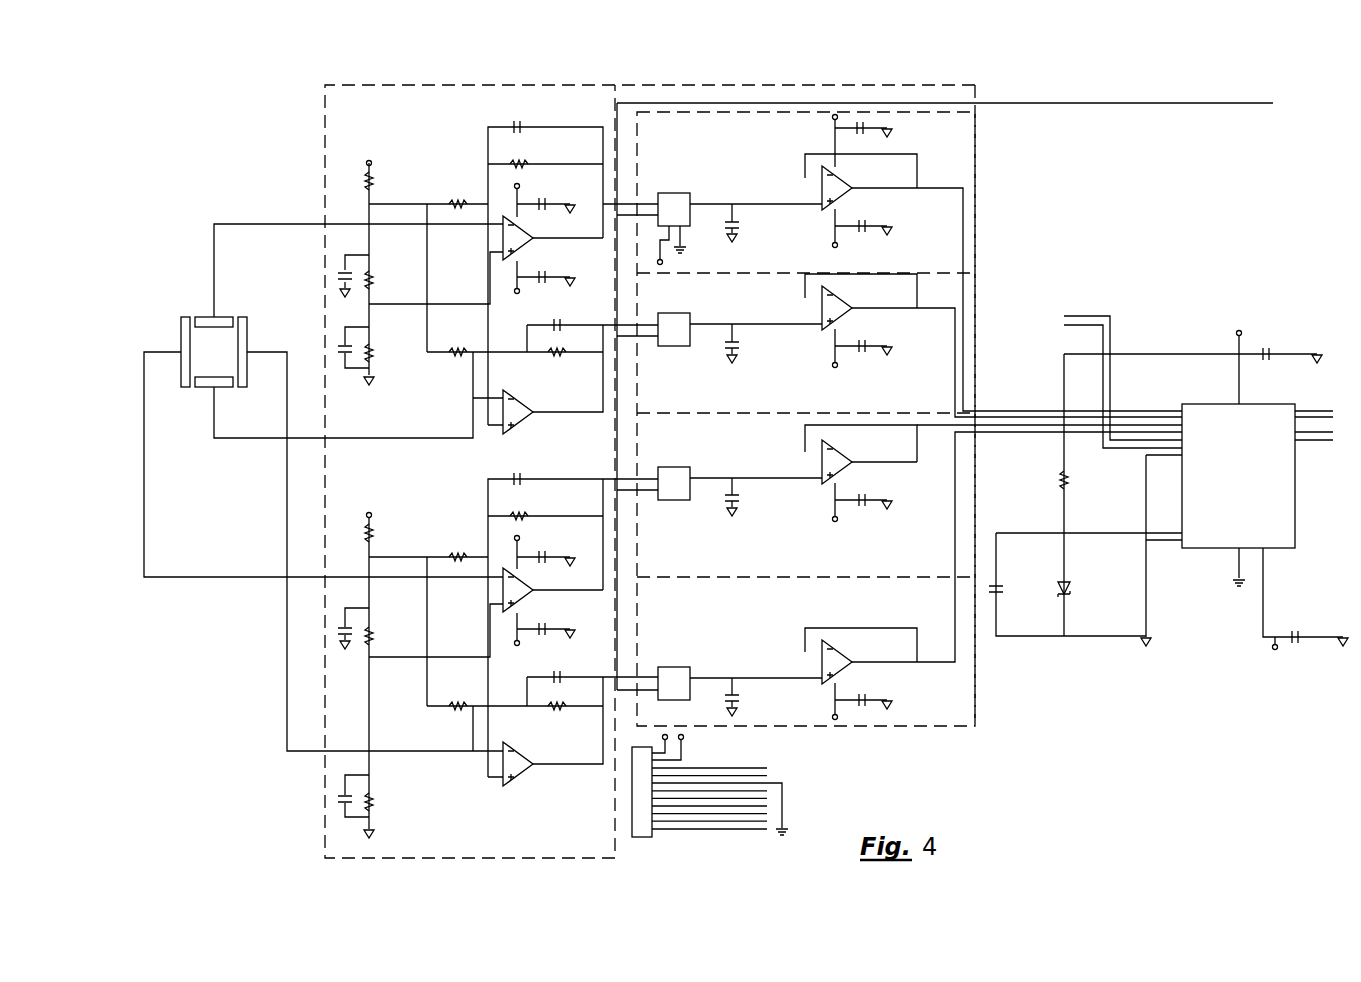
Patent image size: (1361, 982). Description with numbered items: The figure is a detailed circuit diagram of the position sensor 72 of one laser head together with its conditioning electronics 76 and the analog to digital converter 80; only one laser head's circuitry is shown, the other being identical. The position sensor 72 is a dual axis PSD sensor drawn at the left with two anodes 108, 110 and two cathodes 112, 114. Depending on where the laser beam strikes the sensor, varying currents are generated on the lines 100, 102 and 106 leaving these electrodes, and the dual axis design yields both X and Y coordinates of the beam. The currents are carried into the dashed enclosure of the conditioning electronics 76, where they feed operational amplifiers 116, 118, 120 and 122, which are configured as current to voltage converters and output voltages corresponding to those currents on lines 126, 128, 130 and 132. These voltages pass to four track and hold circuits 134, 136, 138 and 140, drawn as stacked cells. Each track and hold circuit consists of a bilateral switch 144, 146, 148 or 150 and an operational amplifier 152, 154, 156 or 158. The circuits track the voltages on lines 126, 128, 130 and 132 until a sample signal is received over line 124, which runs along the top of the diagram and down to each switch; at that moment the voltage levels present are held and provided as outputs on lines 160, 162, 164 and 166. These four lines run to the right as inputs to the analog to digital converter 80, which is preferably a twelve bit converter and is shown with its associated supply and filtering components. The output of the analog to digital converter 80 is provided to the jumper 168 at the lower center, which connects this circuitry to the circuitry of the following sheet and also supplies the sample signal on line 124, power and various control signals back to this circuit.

The position sensor 72 is at (220, 351).
The conditioning electronics 76 is at (667, 85).
The analog to digital converter 80 is at (1290, 402).
The line 100 is at (247, 224).
The line 102 is at (240, 438).
The line 106 is at (287, 526).
The anode 108 is at (224, 316).
The anode 110 is at (234, 388).
The cathode 112 is at (180, 334).
The cathode 114 is at (250, 331).
The operational amplifier 116 is at (479, 273).
The operational amplifier 118 is at (498, 386).
The operational amplifier 120 is at (498, 651).
The operational amplifier 122 is at (498, 754).
The line 124 is at (1052, 103).
The line 126 is at (603, 258).
The line 128 is at (603, 432).
The line 130 is at (603, 612).
The line 132 is at (603, 788).
The track and hold circuit 134 is at (728, 156).
The track and hold circuit 136 is at (728, 307).
The track and hold circuit 138 is at (728, 455).
The track and hold circuit 140 is at (753, 653).
The bilateral switch 144 is at (688, 226).
The bilateral switch 146 is at (688, 347).
The bilateral switch 148 is at (688, 500).
The bilateral switch 150 is at (665, 700).
The operational amplifier 152 is at (820, 205).
The operational amplifier 154 is at (820, 325).
The operational amplifier 156 is at (820, 478).
The operational amplifier 158 is at (820, 678).
The line 160 is at (933, 188).
The line 162 is at (933, 310).
The line 164 is at (940, 427).
The line 166 is at (935, 663).
The jumper 168 is at (638, 837).